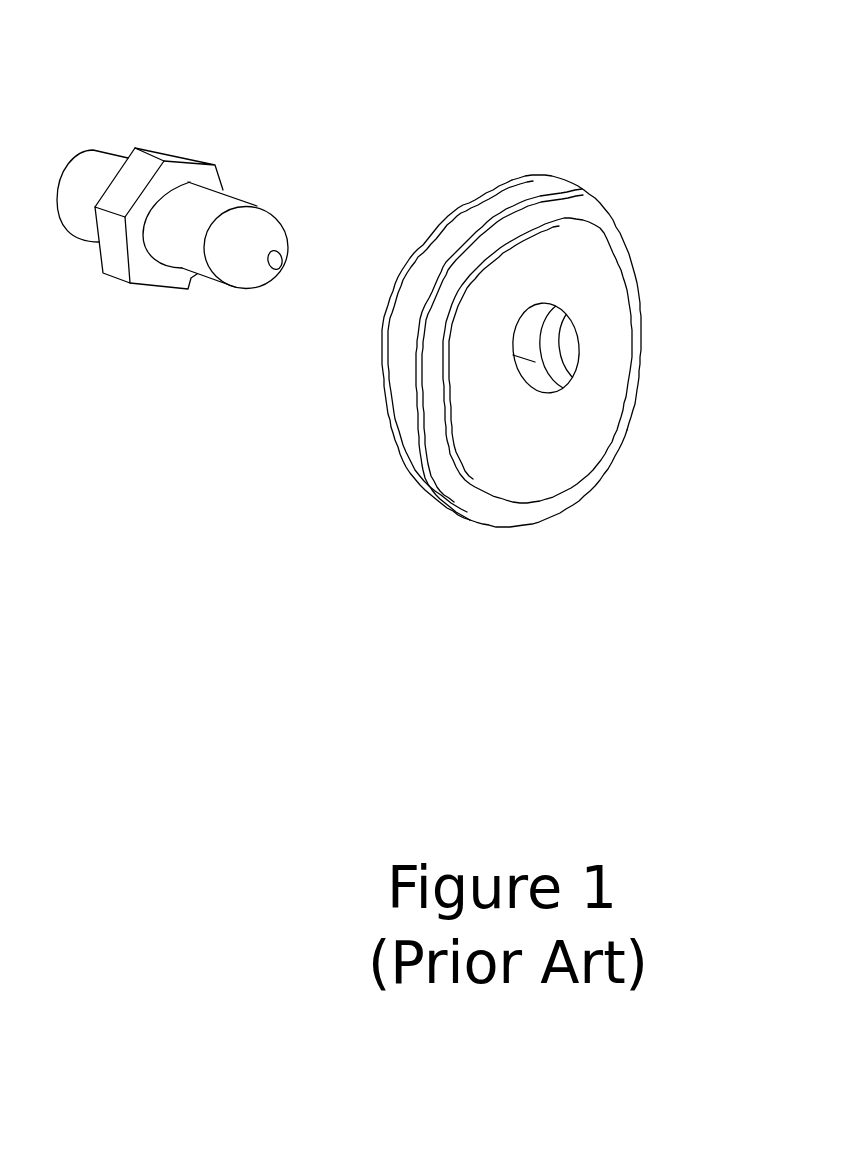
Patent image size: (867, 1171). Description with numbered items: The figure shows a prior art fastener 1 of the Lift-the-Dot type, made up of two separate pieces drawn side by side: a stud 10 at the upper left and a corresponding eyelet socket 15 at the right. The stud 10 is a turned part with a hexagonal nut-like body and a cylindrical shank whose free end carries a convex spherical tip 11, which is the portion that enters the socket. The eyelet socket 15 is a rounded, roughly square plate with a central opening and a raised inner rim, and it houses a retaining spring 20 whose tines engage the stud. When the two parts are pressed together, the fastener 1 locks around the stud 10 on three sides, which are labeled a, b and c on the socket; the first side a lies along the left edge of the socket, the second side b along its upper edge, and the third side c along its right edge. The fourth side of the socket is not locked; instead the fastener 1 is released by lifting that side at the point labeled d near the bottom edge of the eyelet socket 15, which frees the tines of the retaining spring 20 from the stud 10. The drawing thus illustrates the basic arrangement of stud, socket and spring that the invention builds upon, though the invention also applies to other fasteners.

The fastener 1 is at (165, 413).
The stud 10 is at (186, 114).
The convex spherical tip 11 is at (268, 213).
The eyelet socket 15 is at (598, 175).
The retaining spring 20 is at (563, 332).
The first locking side a is at (381, 411).
The second locking side b is at (467, 200).
The third locking side c is at (640, 278).
The fourth side lifting point d is at (552, 530).